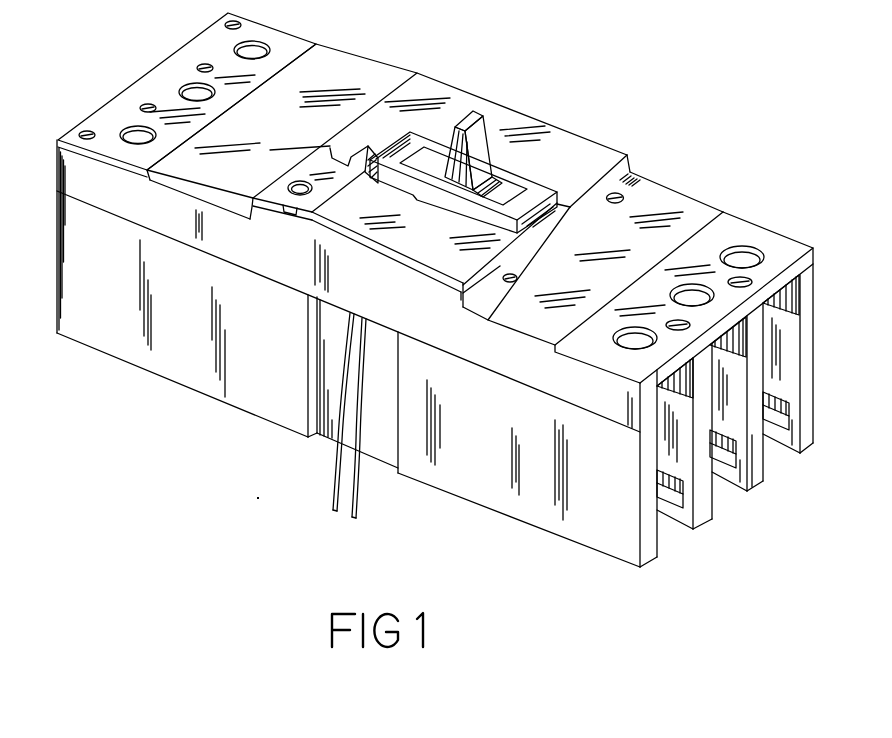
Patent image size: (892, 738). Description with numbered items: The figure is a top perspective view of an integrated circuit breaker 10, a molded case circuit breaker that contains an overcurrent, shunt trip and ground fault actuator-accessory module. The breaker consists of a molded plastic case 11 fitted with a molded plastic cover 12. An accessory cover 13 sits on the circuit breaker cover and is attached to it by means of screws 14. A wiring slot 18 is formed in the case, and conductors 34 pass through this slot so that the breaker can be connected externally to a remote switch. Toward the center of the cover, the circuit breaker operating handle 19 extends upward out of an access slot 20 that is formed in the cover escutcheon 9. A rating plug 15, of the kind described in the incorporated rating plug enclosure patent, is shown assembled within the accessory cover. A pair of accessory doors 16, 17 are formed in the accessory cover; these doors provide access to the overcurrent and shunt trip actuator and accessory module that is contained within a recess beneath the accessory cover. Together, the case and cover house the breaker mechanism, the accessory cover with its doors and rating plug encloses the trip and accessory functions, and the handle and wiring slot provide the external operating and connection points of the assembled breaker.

The cover escutcheon 9 is at (542, 178).
The integrated circuit breaker 10 is at (762, 618).
The molded plastic case 11 is at (557, 537).
The molded plastic cover 12 is at (486, 375).
The accessory cover 13 is at (268, 213).
The screws 14 is at (632, 203).
The rating plug 15 is at (338, 160).
The accessory door 16 is at (583, 167).
The accessory door 17 is at (440, 245).
The wiring slot 18 is at (390, 407).
The circuit breaker operating handle 19 is at (485, 125).
The access slot 20 is at (497, 177).
The conductors 34 is at (363, 491).